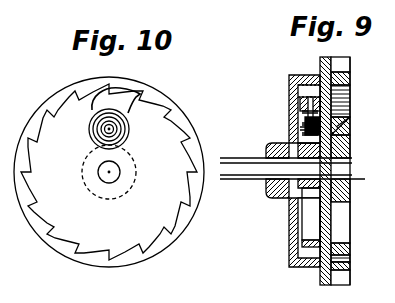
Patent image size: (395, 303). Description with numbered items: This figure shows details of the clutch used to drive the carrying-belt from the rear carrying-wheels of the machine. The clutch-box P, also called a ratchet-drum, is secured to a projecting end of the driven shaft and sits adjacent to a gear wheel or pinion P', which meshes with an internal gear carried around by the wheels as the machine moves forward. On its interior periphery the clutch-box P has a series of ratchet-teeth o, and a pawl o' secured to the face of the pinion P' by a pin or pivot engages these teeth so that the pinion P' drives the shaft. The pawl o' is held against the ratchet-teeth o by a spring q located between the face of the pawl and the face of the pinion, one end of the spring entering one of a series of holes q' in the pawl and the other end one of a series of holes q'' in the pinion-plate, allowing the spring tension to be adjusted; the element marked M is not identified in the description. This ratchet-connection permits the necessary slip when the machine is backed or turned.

In FIG. 10, the clutch-box P is at (109, 172).
In FIG. 9, the clutch-box P is at (292, 160).
In FIG. 9, the gear wheel or pinion P' is at (348, 170).
In FIG. 10, the spring q is at (121, 130).
In FIG. 9, the spring q is at (287, 123).
In FIG. 9, the holes in the pawl q' is at (296, 102).
In FIG. 9, the holes in the pinion-plate q'' is at (343, 129).
In FIG. 10, the ratchet-teeth o is at (109, 172).
In FIG. 10, the pawl o' is at (119, 105).
In FIG. 9, the pawl o' is at (362, 113).
In FIG. 9, the spring block M is at (310, 126).